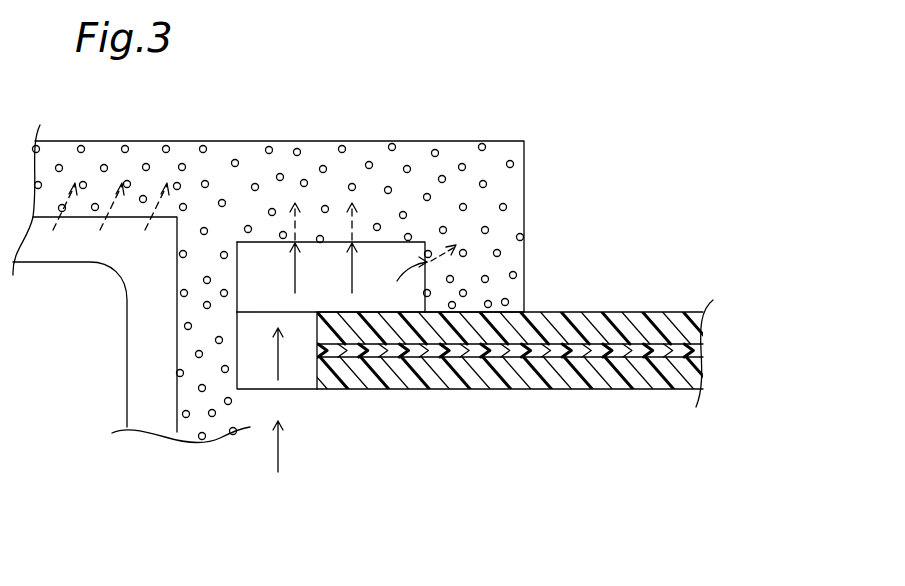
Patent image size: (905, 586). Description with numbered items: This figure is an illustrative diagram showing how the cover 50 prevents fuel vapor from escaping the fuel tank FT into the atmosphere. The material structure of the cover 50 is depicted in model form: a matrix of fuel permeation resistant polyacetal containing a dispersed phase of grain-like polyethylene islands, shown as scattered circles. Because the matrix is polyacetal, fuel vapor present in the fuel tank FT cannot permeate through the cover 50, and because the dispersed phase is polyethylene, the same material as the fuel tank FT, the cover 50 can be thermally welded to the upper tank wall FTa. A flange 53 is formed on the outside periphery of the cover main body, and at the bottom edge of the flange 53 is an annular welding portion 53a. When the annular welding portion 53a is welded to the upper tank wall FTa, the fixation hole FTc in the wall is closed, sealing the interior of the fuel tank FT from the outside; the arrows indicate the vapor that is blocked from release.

The cover 50 is at (183, 141).
The flange 53 is at (425, 141).
The annular welding portion 53a is at (489, 298).
The upper tank wall FTa is at (655, 312).
The fuel tank FT is at (515, 378).
The fixation hole FTc is at (316, 381).